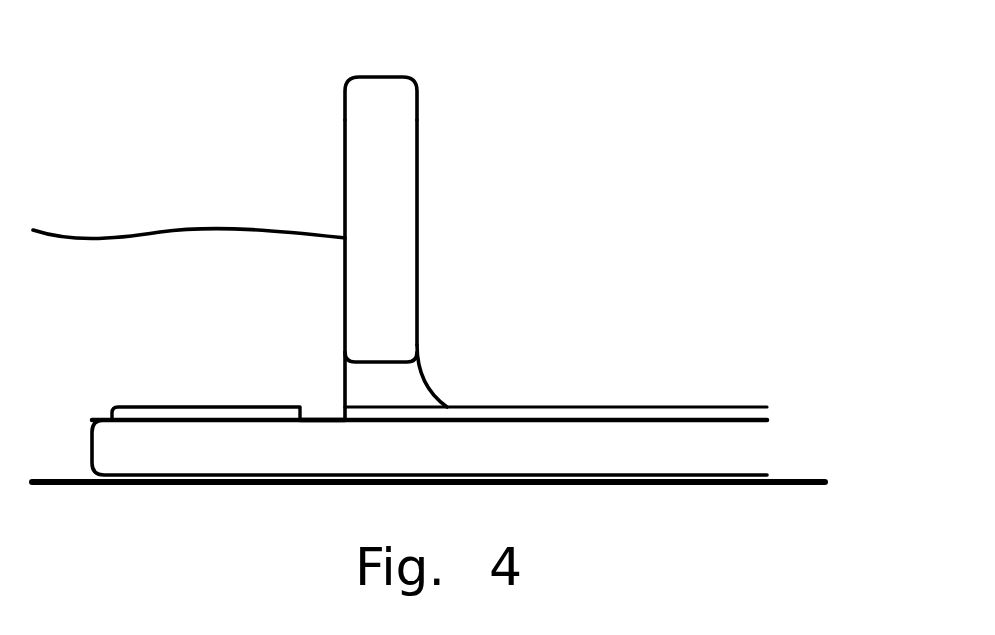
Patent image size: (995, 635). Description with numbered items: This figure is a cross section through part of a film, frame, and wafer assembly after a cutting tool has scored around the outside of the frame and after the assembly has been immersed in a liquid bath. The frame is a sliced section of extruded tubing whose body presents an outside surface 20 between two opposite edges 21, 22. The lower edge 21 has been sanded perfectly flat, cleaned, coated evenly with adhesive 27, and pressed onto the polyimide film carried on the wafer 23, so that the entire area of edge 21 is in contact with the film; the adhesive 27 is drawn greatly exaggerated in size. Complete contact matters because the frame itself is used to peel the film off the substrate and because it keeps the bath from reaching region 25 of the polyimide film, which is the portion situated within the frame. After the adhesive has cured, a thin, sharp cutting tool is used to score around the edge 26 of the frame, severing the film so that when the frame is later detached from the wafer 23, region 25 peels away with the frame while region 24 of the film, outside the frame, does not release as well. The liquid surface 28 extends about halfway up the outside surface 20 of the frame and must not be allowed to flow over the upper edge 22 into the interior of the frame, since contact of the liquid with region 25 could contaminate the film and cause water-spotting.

The outside surface of the frame 20 is at (340, 180).
The edge of the frame 21 is at (383, 358).
The edge of the frame 22 is at (375, 75).
The wafer 23 is at (428, 451).
The region of the polyimide film 24 is at (198, 405).
The region of the polyimide film 25 is at (673, 405).
The edge of the frame 26 is at (318, 405).
The adhesive 27 is at (430, 378).
The liquid surface 28 is at (208, 225).